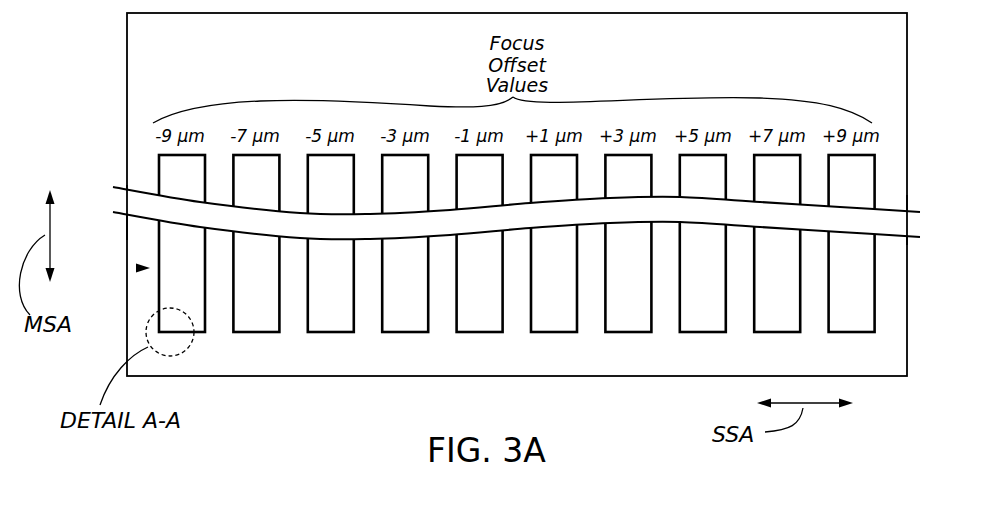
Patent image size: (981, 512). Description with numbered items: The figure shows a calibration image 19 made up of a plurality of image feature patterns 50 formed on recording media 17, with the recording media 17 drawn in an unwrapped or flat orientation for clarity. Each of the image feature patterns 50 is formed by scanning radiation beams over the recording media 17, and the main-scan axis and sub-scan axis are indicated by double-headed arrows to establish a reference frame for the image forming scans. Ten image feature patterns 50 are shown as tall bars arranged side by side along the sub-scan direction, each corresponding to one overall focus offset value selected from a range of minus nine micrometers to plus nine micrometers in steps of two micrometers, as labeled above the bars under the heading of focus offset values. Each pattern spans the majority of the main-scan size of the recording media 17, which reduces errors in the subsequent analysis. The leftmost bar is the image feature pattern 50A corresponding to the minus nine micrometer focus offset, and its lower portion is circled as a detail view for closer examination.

The recording media 17 is at (143, 305).
The calibration image 19 is at (137, 268).
The image feature patterns 50 is at (517, 306).
The image feature pattern corresponding to −9 µm focus offset 50A is at (183, 297).